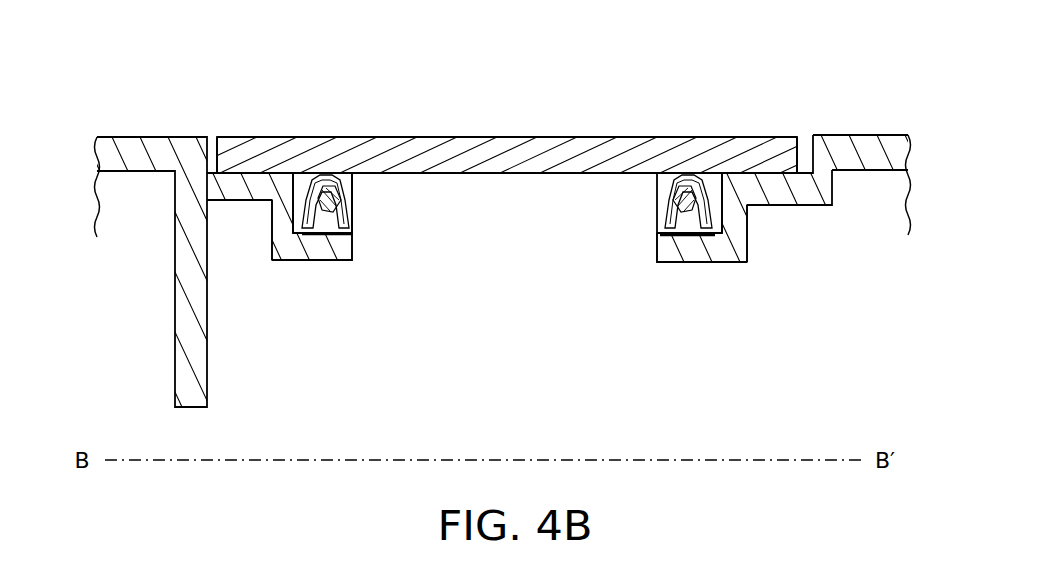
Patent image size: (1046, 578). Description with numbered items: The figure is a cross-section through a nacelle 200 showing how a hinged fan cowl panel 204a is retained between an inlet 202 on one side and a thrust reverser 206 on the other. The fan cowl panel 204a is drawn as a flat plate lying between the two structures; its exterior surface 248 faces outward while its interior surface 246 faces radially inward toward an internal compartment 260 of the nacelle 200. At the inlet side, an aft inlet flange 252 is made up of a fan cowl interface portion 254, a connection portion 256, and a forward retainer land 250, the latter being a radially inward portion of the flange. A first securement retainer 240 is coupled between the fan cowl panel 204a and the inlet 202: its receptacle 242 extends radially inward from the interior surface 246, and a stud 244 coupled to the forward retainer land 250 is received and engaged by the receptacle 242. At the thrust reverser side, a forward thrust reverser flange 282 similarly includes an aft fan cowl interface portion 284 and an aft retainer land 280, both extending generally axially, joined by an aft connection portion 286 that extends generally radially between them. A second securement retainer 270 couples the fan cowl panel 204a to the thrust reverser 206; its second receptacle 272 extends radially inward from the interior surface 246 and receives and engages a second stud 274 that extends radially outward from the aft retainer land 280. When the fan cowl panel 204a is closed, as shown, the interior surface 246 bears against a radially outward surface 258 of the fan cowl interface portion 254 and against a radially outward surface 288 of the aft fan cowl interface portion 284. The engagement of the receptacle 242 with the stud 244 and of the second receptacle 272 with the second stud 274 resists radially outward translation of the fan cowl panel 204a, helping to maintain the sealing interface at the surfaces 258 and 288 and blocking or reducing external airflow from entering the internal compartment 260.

The nacelle 200 is at (665, 80).
The inlet 202 is at (140, 140).
The fan cowl panel 204a is at (463, 137).
The thrust reverser 206 is at (855, 142).
The first securement retainer 240 is at (372, 245).
The receptacle 242 is at (350, 220).
The stud 244 is at (336, 195).
The interior surface 246 is at (513, 175).
The exterior surface 248 is at (560, 137).
The forward retainer land 250 is at (325, 243).
The aft inlet flange 252 is at (352, 344).
The fan cowl interface portion 254 is at (233, 183).
The connection portion 256 is at (285, 223).
The radially outward surface 258 is at (270, 172).
The internal compartment 260 is at (508, 366).
The second securement retainer 270 is at (640, 236).
The second receptacle 272 is at (665, 223).
The second stud 274 is at (680, 197).
The aft retainer land 280 is at (700, 250).
The forward thrust reverser flange 282 is at (807, 358).
The aft fan cowl interface portion 284 is at (787, 195).
The aft connection portion 286 is at (737, 233).
The radially outward surface 288 is at (762, 172).